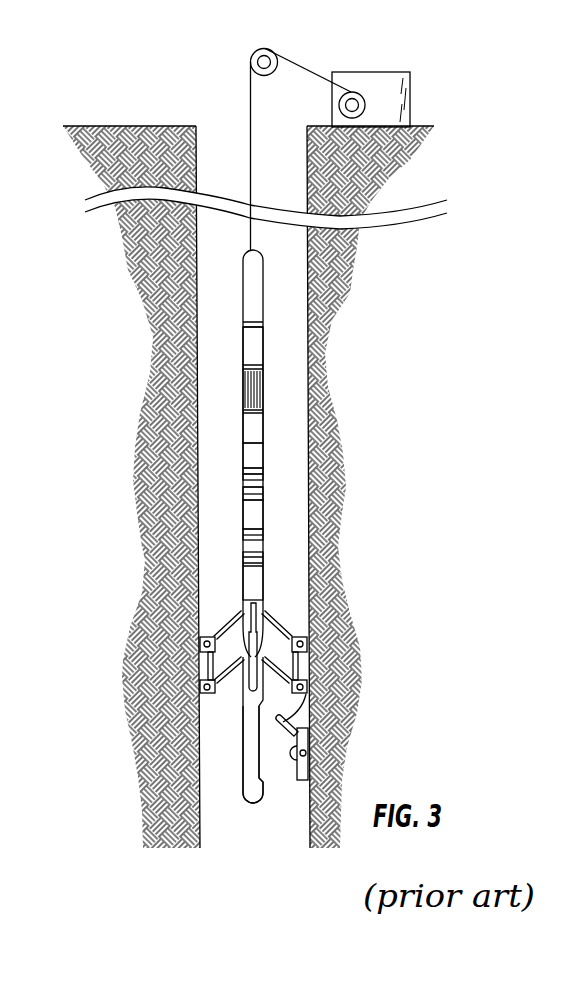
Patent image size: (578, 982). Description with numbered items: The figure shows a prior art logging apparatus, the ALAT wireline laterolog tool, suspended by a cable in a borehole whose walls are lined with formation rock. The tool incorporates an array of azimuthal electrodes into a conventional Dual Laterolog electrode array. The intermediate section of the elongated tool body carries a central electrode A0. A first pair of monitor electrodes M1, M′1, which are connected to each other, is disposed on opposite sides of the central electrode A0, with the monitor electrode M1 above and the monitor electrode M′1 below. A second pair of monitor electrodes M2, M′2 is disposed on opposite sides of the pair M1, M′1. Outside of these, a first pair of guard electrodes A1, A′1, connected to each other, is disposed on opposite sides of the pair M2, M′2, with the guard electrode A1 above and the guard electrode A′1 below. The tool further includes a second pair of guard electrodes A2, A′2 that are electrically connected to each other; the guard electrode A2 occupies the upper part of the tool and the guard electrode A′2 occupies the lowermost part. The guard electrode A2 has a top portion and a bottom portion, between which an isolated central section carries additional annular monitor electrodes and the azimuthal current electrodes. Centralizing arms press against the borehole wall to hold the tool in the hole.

The guard electrode A2 is at (255, 342).
The guard electrode A1 is at (255, 457).
The monitor electrode M2 is at (255, 472).
The monitor electrode M1 is at (258, 479).
The central electrode A0 is at (258, 492).
The monitor electrode M′1 is at (258, 511).
The monitor electrode M′2 is at (259, 538).
The guard electrode A′1 is at (256, 583).
The guard electrode A′2 is at (252, 792).